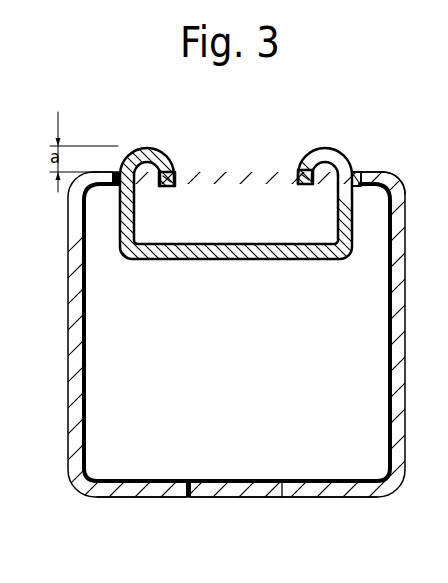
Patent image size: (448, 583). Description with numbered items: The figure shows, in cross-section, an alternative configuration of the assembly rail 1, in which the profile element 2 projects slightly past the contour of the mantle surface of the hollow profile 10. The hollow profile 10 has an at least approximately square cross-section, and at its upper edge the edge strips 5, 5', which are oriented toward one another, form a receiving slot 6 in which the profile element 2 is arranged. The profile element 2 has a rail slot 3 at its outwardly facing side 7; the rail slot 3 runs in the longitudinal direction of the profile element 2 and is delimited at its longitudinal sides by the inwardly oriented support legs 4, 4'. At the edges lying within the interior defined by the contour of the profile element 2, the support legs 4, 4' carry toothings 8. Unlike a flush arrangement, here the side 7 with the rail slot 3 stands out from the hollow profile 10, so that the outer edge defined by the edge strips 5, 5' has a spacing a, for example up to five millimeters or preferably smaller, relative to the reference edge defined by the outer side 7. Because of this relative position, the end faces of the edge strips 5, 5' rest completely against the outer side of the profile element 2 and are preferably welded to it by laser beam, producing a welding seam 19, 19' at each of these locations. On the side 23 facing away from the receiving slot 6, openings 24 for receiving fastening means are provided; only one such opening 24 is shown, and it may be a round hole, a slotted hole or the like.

The assembly rail 1 is at (309, 110).
The profile element 2 is at (216, 268).
The rail slot 3 is at (241, 170).
The support leg 4 is at (182, 138).
The support leg 4' is at (313, 137).
The edge strip 5 is at (91, 130).
The edge strip 5' is at (408, 140).
The receiving slot 6 is at (367, 170).
The outwardly facing side 7 is at (143, 148).
The toothing 8 is at (165, 187).
The hollow profile 10 is at (73, 308).
The welding seam 19 is at (118, 137).
The welding seam 19' is at (347, 138).
The side facing away from the receiving slot 23 is at (150, 498).
The opening 24 is at (236, 498).